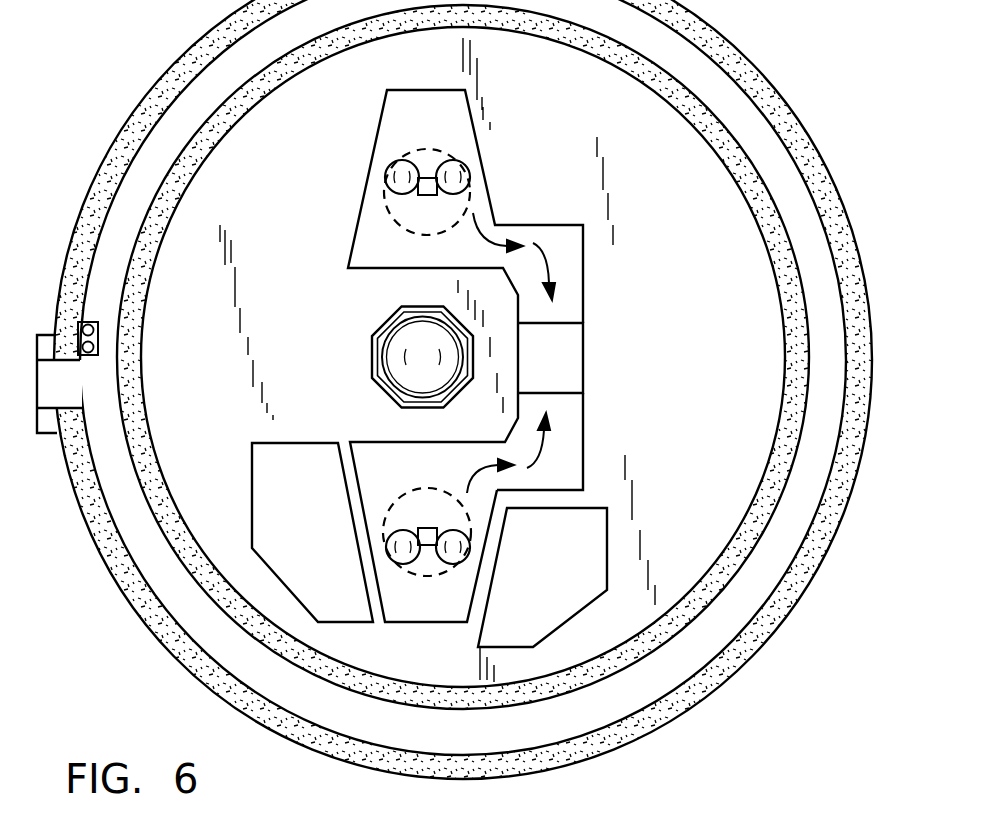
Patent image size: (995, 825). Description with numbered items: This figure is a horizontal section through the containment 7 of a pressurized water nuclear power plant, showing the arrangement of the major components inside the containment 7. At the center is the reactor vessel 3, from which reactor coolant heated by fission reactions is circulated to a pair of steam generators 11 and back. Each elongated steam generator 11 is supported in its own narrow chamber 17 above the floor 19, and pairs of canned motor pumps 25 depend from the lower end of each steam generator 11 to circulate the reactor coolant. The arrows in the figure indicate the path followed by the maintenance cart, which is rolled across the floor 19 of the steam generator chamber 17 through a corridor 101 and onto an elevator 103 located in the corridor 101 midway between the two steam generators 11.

The containment 7 is at (773, 197).
The reactor vessel 3 is at (373, 338).
The steam generator chamber 17 is at (383, 110).
The floor 19 is at (458, 137).
The canned motor pumps 25 is at (388, 163).
The steam generators 11 is at (385, 222).
The corridor 101 is at (570, 450).
The elevator 103 is at (567, 362).